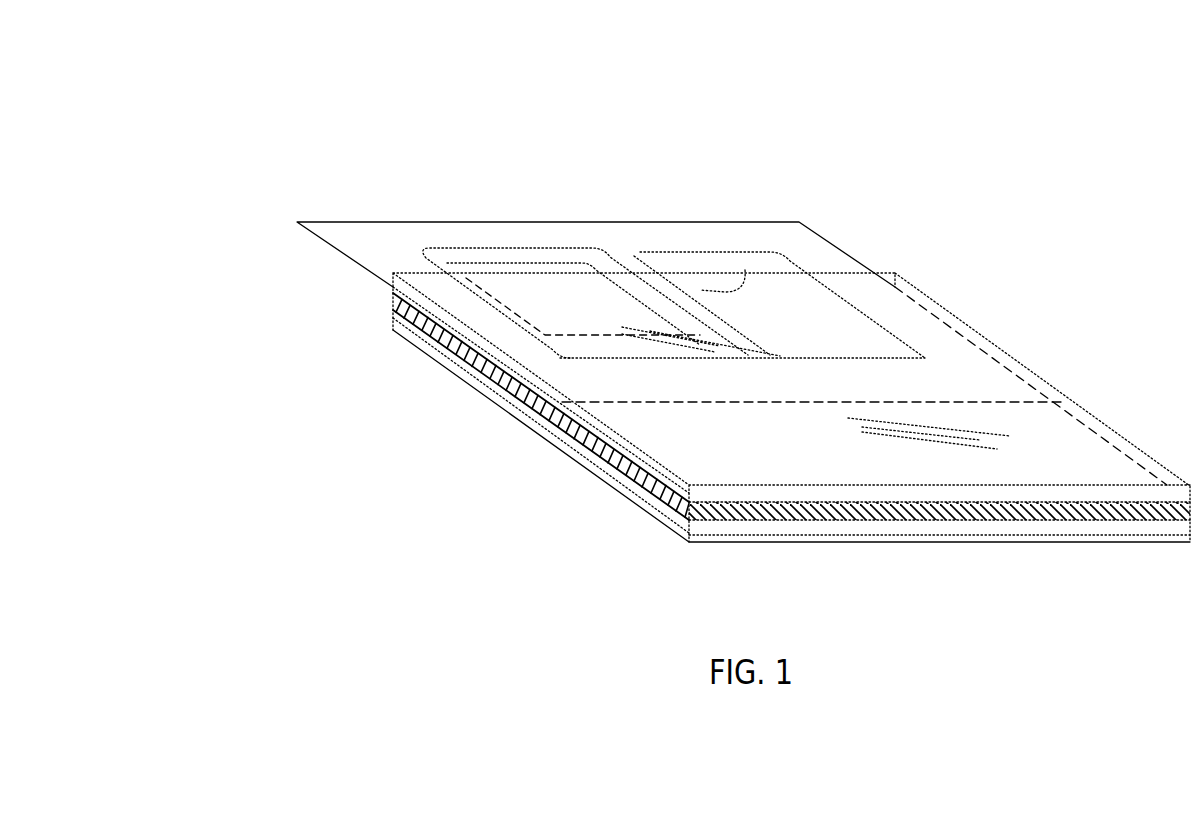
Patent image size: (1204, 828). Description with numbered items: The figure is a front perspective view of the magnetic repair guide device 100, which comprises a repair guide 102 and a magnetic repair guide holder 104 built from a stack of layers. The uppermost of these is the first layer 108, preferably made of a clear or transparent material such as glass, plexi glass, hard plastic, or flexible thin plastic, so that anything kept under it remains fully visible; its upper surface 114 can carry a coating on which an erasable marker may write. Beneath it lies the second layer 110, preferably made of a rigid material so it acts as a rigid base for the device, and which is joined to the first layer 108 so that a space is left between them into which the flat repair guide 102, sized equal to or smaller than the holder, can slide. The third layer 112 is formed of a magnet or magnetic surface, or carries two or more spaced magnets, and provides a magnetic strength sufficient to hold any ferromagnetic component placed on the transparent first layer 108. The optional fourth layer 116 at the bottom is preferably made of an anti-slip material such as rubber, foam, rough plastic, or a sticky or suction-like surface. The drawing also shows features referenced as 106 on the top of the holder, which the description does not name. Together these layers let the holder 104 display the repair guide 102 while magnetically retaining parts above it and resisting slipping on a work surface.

The magnetic repair guide device 100 is at (969, 138).
The repair guide 102 is at (332, 232).
The magnetic repair guide holder 104 is at (932, 300).
The apertures 106 is at (550, 253).
The first layer 108 is at (398, 287).
The second layer 110 is at (393, 302).
The third layer 112 is at (418, 332).
The upper surface 114 is at (1093, 444).
The fourth layer 116 is at (698, 545).